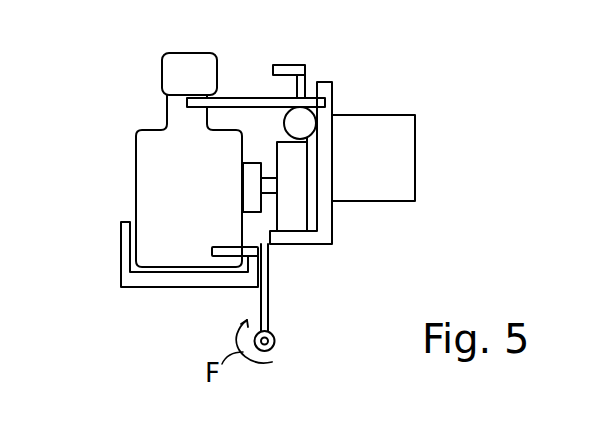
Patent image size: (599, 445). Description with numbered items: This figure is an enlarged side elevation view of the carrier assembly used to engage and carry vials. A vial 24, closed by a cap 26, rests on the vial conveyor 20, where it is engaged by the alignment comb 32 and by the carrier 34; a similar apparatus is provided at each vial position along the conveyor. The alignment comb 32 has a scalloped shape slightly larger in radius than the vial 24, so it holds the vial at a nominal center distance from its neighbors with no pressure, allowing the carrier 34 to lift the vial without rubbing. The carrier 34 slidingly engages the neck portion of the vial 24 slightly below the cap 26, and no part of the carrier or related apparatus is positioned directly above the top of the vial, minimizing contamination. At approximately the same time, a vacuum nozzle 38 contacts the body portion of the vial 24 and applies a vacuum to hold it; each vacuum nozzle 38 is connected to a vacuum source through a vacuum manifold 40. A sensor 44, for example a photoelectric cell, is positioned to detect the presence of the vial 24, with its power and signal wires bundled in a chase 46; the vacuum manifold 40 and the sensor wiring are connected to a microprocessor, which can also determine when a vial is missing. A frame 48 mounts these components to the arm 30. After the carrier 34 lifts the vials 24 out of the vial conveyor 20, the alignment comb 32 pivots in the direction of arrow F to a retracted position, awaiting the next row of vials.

The vial conveyor 20 is at (120, 243).
The vial 24 is at (148, 130).
The cap 26 is at (163, 62).
The arm 30 is at (416, 180).
The alignment comb 32 is at (260, 300).
The carrier 34 is at (241, 98).
The vacuum nozzle 38 is at (238, 195).
The vacuum manifold 40 is at (296, 213).
The sensor 44 is at (297, 65).
The chase 46 is at (316, 113).
The frame 48 is at (333, 222).